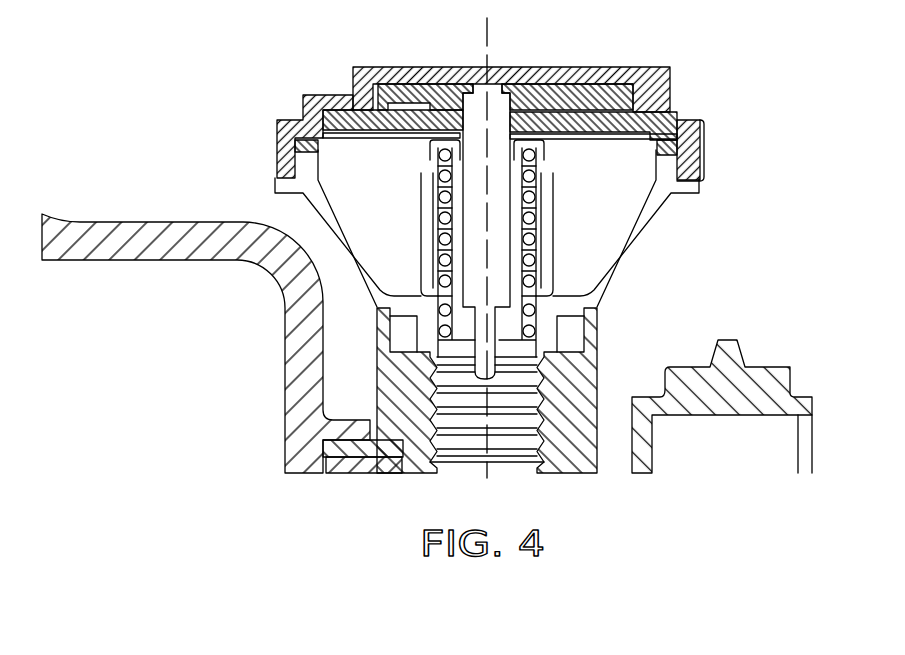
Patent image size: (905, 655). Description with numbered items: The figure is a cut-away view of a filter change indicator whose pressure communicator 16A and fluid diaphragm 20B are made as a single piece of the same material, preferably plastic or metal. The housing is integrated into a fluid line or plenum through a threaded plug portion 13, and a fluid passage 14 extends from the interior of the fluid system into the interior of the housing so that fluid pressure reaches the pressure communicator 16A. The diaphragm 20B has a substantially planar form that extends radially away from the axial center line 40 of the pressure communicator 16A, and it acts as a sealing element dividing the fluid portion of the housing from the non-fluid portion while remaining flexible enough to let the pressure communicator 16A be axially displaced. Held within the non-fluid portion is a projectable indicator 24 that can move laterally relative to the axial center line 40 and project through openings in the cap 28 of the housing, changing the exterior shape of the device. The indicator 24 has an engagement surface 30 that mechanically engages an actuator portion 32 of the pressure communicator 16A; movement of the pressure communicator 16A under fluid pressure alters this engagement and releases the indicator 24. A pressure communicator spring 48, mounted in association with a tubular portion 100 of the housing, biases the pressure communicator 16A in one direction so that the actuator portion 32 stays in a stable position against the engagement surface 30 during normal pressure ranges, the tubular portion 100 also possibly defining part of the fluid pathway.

The pressure communicator 16A is at (406, 76).
The projectable indicator 24 is at (589, 93).
The cap 28 is at (275, 128).
The fluid diaphragm 20B is at (620, 140).
The engagement surface 30 is at (490, 97).
The actuator portion 32 is at (494, 97).
The axial center line 40 is at (487, 192).
The tubular portion 100 is at (547, 240).
The pressure communicator spring 48 is at (528, 262).
The threaded plug portion 13 is at (522, 405).
The fluid passage 14 is at (480, 417).